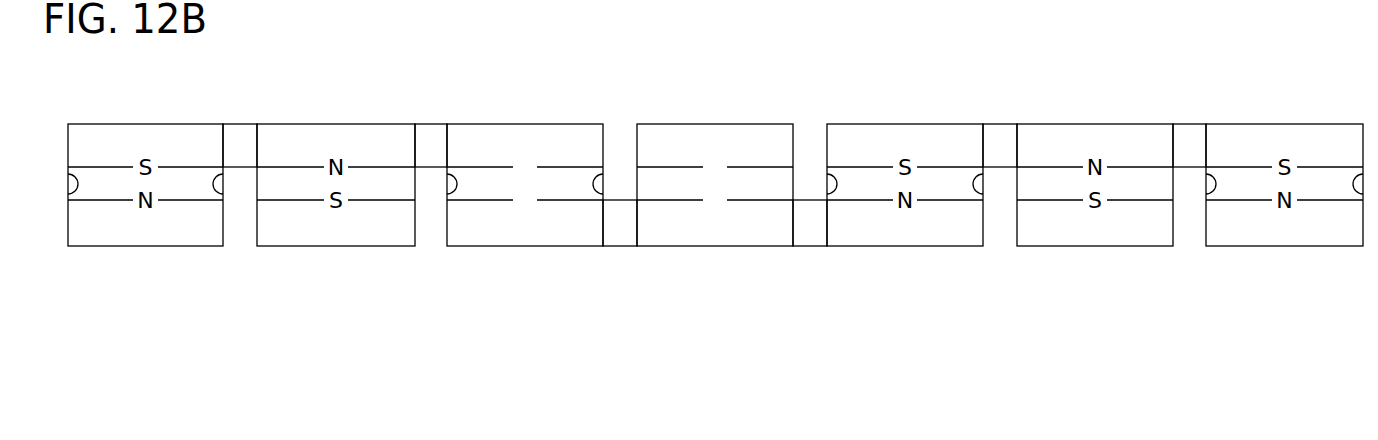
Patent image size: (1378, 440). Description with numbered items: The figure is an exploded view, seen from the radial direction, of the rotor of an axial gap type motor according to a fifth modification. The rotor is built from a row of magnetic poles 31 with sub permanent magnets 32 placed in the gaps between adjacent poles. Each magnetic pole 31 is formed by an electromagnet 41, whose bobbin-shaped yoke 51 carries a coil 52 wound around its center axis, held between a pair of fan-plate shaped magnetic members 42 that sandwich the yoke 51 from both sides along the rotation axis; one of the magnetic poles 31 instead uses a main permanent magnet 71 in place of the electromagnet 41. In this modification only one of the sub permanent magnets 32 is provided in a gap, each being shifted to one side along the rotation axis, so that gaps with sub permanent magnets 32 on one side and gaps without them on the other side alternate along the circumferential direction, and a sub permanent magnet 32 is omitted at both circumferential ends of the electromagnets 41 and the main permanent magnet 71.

The magnetic pole 31 is at (598, 112).
The sub permanent magnet 32 is at (431, 127).
The electromagnet 41 is at (553, 170).
The magnetic member 42 is at (488, 145).
The yoke 51 is at (505, 187).
The coil 52 is at (465, 182).
The main permanent magnet 71 is at (672, 182).